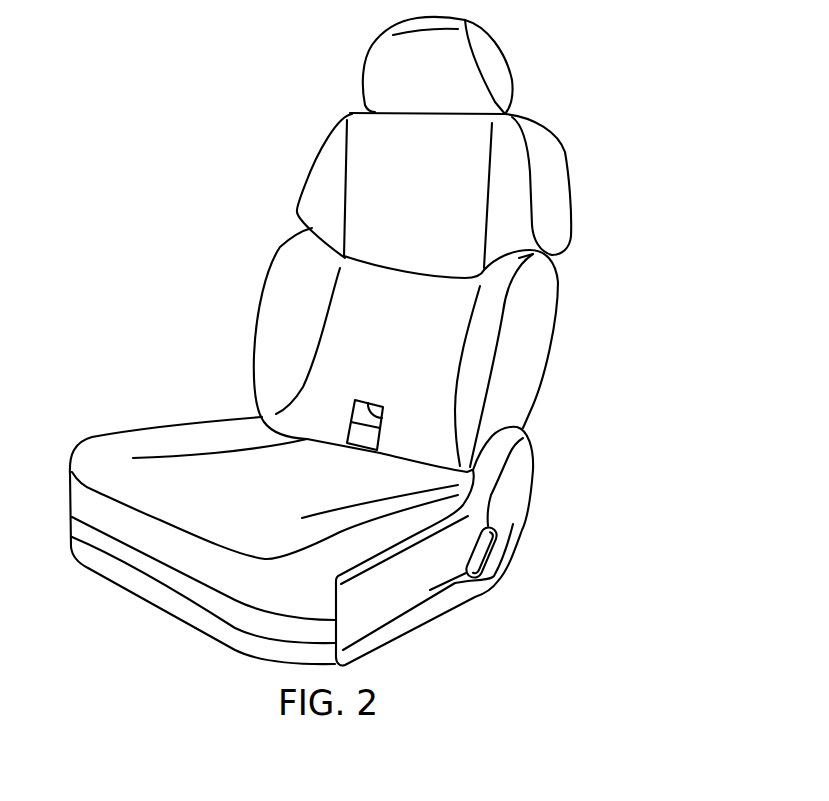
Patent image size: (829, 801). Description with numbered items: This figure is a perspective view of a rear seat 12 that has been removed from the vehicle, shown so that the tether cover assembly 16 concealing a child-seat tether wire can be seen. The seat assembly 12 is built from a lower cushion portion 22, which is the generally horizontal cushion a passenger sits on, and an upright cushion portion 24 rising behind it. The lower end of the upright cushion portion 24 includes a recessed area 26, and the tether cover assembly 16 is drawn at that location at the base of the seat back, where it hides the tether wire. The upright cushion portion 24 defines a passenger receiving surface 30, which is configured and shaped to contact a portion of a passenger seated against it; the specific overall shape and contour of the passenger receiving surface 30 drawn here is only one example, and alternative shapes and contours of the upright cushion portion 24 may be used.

The rear seat 12 is at (591, 64).
The tether cover assembly 16 is at (363, 415).
The lower cushion portion 22 is at (213, 483).
The upright cushion portion 24 is at (528, 317).
The recessed area 26 is at (381, 423).
The passenger receiving surface 30 is at (372, 322).